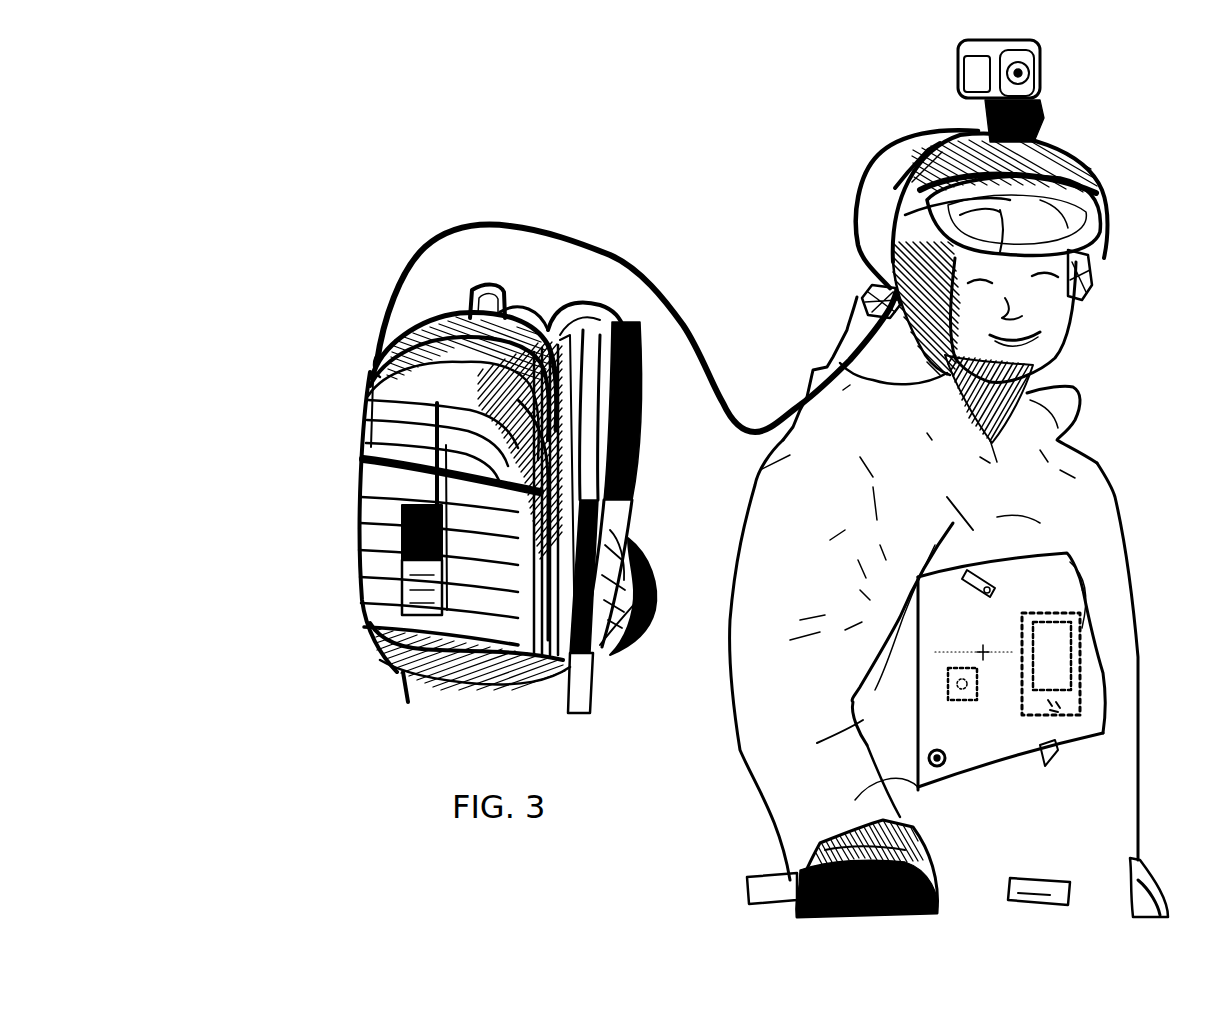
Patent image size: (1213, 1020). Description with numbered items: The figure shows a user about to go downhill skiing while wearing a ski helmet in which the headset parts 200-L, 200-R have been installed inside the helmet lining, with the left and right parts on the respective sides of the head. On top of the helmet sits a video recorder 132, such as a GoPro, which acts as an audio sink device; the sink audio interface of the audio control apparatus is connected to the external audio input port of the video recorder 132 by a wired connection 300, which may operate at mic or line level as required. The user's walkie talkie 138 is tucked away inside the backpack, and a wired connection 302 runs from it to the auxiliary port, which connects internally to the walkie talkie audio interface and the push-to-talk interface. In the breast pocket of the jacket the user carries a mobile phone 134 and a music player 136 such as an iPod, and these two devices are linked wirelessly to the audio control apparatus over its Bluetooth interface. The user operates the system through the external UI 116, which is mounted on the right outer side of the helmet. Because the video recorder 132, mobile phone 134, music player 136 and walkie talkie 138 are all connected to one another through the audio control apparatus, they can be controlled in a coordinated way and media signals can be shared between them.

The external UI 116 is at (914, 160).
The video recorder 132 is at (1042, 102).
The mobile phone 134 is at (1062, 612).
The music player 136 is at (975, 668).
The walkie talkie 138 is at (398, 565).
The headset part 200-R is at (882, 280).
The headset part 200-L is at (1090, 282).
The wired connection 300 is at (918, 128).
The wired connection 302 is at (710, 345).